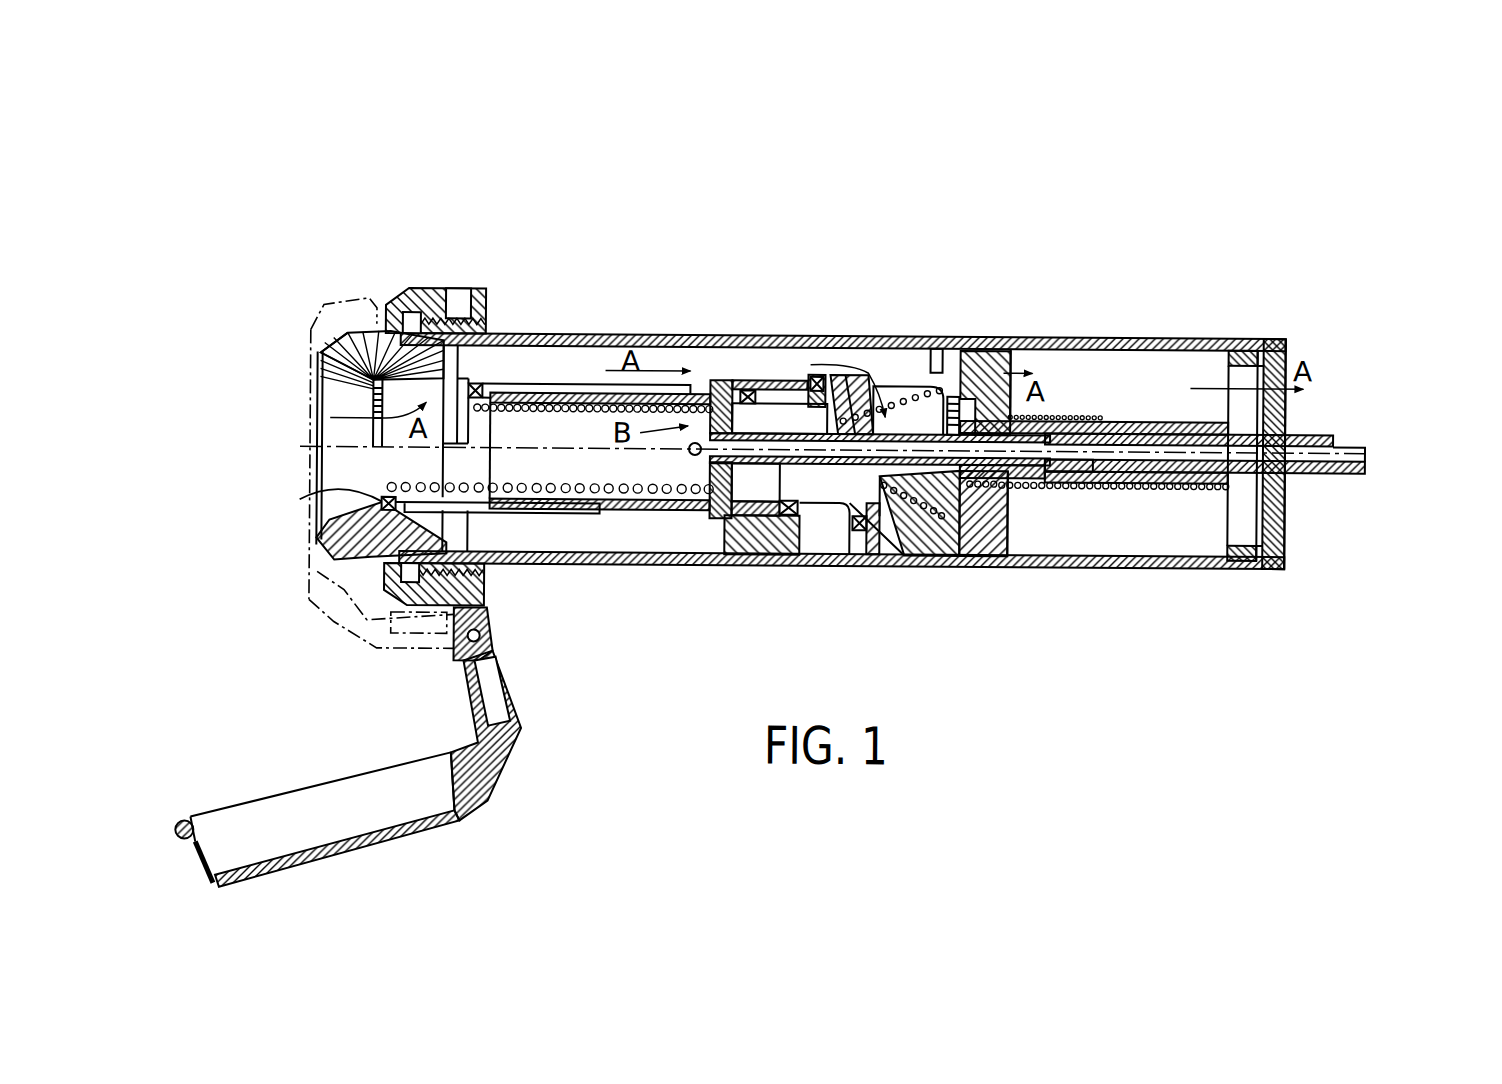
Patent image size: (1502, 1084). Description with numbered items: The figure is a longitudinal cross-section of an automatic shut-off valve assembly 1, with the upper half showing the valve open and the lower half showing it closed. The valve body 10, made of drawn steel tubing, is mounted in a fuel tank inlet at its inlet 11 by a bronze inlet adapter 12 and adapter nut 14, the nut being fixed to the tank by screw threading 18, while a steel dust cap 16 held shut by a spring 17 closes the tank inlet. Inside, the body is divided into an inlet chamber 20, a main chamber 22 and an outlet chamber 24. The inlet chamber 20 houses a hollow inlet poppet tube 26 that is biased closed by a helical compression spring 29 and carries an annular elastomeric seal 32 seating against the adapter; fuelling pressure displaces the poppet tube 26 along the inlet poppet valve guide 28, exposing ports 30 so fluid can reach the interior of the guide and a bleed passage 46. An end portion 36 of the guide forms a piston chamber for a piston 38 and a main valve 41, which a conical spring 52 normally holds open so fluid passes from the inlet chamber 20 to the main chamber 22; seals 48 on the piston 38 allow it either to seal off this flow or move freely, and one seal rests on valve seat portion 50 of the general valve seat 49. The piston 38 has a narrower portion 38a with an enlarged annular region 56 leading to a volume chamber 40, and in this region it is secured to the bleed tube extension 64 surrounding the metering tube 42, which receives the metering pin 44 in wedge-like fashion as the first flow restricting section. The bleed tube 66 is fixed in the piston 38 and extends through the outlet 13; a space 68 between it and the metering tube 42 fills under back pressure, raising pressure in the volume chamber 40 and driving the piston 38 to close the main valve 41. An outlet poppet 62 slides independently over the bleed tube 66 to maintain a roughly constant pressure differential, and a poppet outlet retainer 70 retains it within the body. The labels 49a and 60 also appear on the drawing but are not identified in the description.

The automatic shut-off valve assembly 1 is at (942, 250).
The valve body 10 is at (660, 333).
The inlet 11 is at (266, 466).
The inlet adapter 12 is at (320, 375).
The outlet 13 is at (1412, 470).
The adapter nut 14 is at (415, 288).
The dust cap 16 is at (397, 850).
The spring 17 is at (500, 652).
The screw threading 18 is at (470, 333).
The inlet chamber 20 is at (530, 370).
The main chamber 22 is at (919, 340).
The outlet chamber 24 is at (1113, 385).
The inlet poppet tube 26 is at (560, 509).
The inlet poppet valve guide 28 is at (668, 509).
The spring 29 is at (492, 512).
The ports 30 is at (718, 345).
The sealing means 32 is at (480, 383).
The end portion of inlet poppet valve guide 36 is at (735, 563).
The piston 38 is at (826, 563).
The narrower diameter portion 38a is at (865, 345).
The volume chamber 40 is at (784, 340).
The main valve 41 is at (818, 340).
The metering tube 42 is at (925, 563).
The metering pin 44 is at (690, 563).
The bleed passage 46 is at (1292, 416).
The seals 48 is at (745, 383).
The general valve seat 49 is at (895, 340).
The lower ball detent 49a is at (805, 563).
The valve seat portion 50 is at (905, 563).
The spring 52 is at (970, 563).
The region 56 is at (830, 340).
The vent pin 60 is at (940, 345).
The outlet poppet 62 is at (1012, 340).
The bleed tube extension 64 is at (1085, 563).
The bleed tube 66 is at (1215, 563).
The space 68 is at (1070, 345).
The poppet outlet retainer 70 is at (1210, 340).